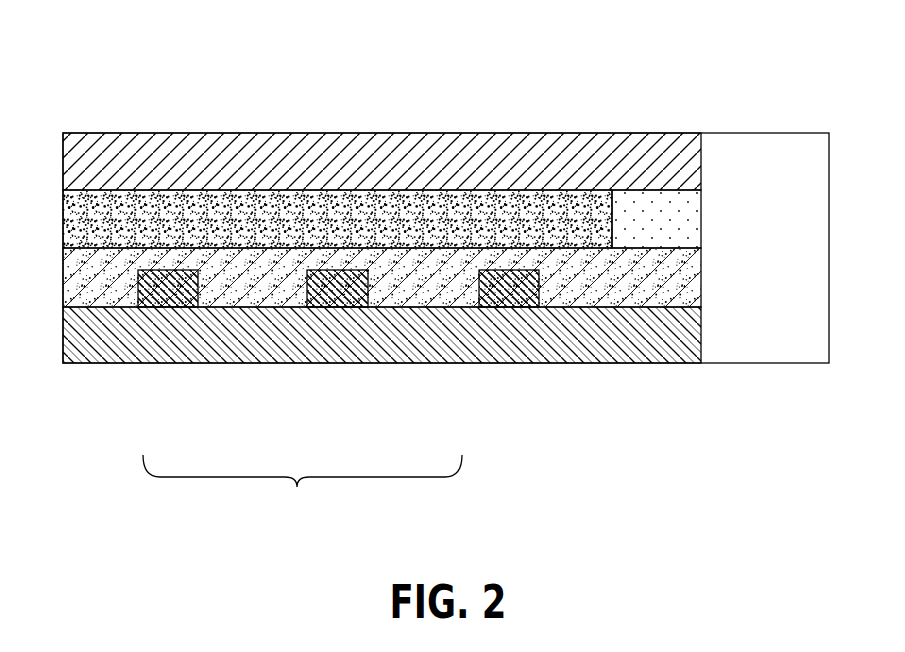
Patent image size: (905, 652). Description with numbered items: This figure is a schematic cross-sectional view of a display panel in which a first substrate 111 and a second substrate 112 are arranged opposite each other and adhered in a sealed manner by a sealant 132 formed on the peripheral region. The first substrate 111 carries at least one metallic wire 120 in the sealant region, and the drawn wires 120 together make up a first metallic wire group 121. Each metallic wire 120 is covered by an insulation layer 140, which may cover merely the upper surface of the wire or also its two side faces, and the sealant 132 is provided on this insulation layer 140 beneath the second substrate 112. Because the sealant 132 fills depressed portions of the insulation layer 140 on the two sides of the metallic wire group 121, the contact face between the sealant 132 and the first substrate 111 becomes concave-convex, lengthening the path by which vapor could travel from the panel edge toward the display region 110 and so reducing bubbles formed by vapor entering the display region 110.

The display region 110 is at (773, 318).
The first substrate 111 is at (580, 332).
The second substrate 112 is at (132, 188).
The metallic wire 120 is at (168, 293).
The first metallic wire group 121 is at (302, 492).
The sealant 132 is at (225, 230).
The insulation layer 140 is at (403, 270).